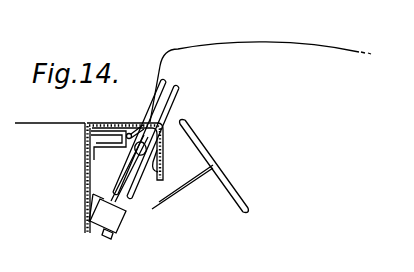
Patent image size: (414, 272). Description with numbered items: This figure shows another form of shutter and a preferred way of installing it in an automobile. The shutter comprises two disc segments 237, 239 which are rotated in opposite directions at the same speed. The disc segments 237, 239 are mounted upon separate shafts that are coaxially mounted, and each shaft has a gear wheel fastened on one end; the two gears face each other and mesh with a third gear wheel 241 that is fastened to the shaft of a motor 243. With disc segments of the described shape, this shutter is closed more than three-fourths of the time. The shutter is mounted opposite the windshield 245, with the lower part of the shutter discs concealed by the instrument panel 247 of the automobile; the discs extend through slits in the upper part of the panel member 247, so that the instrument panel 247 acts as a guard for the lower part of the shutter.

The disc segment 237 is at (153, 99).
The disc segment 239 is at (177, 101).
The third gear wheel 241 is at (146, 158).
The motor 243 is at (98, 217).
The windshield 245 is at (158, 68).
The instrument panel 247 is at (164, 152).